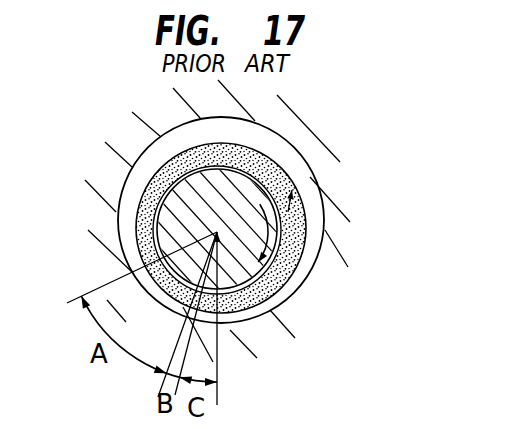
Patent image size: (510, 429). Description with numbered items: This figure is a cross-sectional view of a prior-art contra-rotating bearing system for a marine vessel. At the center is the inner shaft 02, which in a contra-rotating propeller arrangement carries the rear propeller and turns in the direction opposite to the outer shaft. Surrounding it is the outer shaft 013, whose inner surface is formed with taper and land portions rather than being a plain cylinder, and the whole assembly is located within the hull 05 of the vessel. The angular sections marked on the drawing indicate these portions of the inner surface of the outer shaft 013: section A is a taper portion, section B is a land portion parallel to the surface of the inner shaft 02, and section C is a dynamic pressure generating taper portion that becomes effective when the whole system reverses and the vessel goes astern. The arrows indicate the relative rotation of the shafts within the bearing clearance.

The inner shaft 02 is at (252, 197).
The hull 05 is at (340, 233).
The outer shaft 013 is at (298, 275).